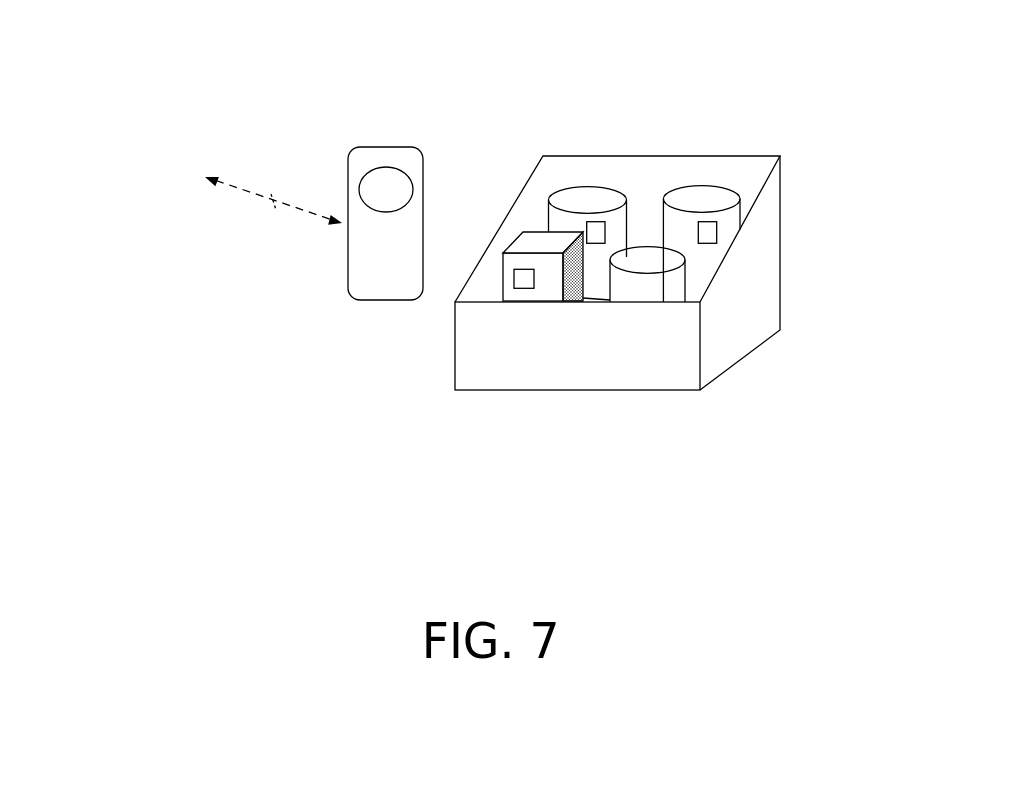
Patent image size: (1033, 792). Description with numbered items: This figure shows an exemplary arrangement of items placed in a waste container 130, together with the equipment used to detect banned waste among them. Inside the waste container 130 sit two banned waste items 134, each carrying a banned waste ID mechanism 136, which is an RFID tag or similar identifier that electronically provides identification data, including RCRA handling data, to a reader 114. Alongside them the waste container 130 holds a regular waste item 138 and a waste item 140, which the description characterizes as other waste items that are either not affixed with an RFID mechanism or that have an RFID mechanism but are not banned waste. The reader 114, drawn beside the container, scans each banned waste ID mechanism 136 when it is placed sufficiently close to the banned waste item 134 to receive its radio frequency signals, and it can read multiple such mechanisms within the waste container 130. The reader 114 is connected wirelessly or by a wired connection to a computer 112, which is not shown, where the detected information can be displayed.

The computer 112 is at (207, 155).
The reader 114 is at (384, 131).
The waste container 130 is at (617, 273).
The banned waste item 134 is at (863, 151).
The banned waste ID mechanism 136 is at (887, 275).
The other waste item 138 is at (487, 290).
The waste item 140 is at (712, 298).